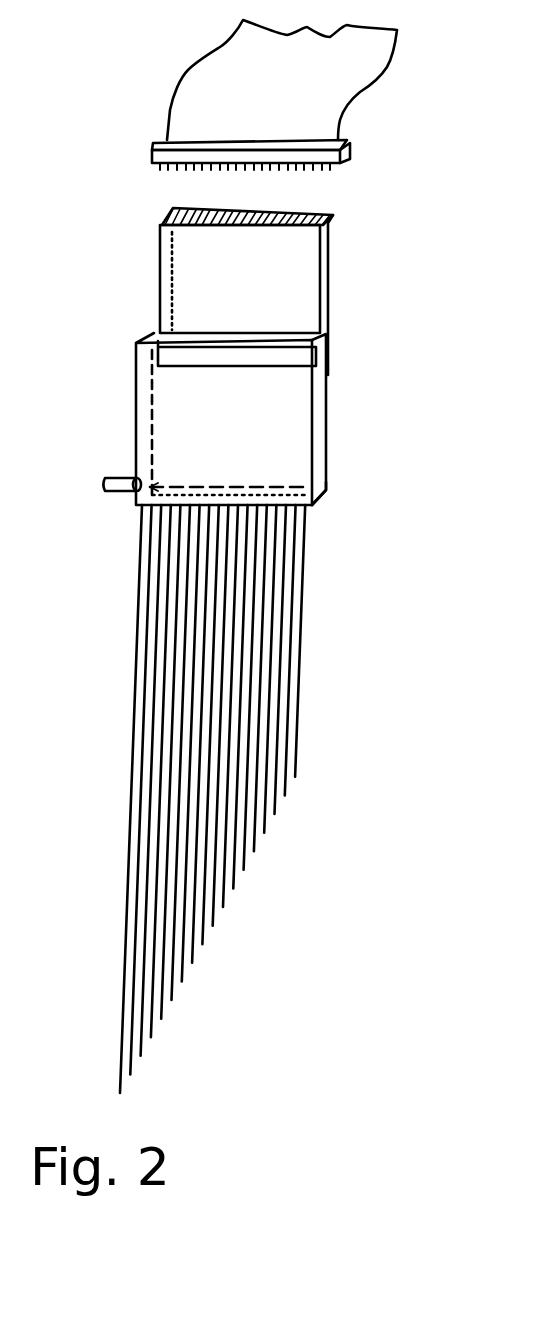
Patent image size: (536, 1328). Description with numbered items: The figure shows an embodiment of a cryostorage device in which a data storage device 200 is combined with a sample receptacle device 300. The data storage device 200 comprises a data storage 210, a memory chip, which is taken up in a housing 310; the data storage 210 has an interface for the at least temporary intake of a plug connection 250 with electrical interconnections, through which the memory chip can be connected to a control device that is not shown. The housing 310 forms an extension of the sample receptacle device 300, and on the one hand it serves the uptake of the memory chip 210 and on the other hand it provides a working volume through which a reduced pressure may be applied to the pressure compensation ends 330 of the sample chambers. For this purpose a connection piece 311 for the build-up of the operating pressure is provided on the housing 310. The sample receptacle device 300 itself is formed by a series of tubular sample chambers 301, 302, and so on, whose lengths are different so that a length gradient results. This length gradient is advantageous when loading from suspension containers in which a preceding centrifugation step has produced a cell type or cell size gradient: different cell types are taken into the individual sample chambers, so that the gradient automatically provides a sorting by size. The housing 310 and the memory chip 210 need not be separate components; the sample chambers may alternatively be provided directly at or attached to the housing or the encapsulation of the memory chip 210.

The plug connection 250 is at (150, 157).
The data storage device 200 is at (127, 229).
The data storage 210 is at (157, 303).
The housing 310 is at (133, 462).
The connection piece 311 is at (120, 492).
The pressure compensation ends 330 is at (415, 483).
The sample receptacle device 300 is at (190, 816).
The sample chamber 301 is at (122, 1092).
The sample chamber 302 is at (130, 1078).